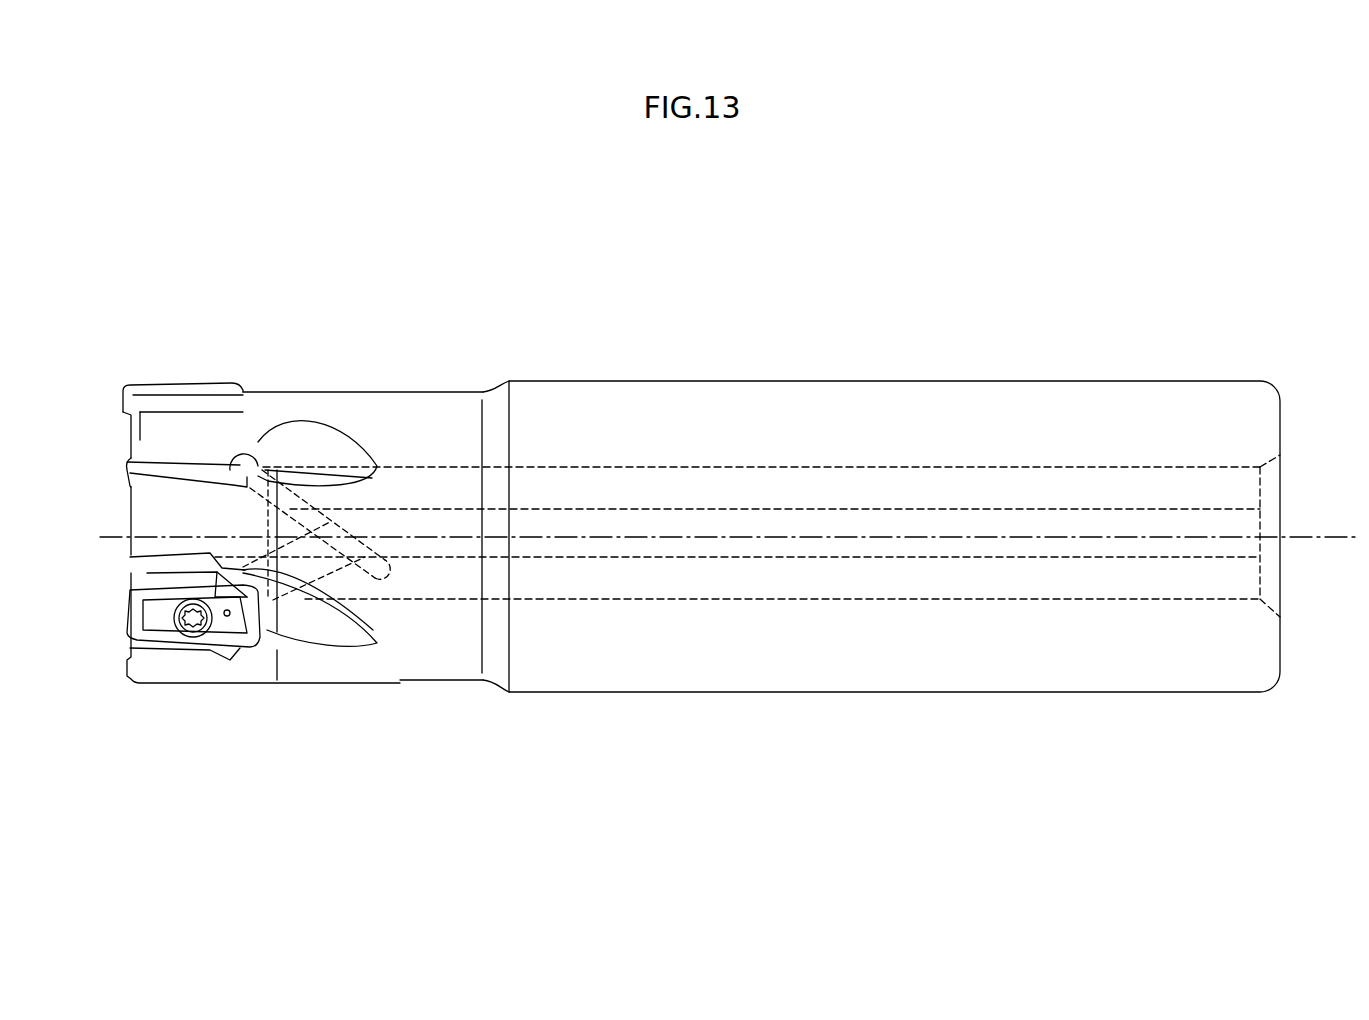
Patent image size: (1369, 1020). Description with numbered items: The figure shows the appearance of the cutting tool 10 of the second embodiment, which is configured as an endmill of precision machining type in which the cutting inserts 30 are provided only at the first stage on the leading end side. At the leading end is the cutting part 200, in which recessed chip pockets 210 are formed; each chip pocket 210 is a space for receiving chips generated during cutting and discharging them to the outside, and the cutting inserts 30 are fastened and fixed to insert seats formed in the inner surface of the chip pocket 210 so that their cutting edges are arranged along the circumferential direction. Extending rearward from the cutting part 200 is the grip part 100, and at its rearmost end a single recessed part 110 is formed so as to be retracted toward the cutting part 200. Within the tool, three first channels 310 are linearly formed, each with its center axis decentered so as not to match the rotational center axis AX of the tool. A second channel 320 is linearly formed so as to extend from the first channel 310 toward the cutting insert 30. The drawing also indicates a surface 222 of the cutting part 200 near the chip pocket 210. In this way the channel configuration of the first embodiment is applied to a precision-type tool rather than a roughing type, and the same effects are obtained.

The cutting tool 10 is at (1172, 255).
The grip part 100 is at (791, 353).
The recessed part 110 is at (1266, 527).
The cutting part 200 is at (256, 322).
The chip pocket 210 is at (193, 432).
The chip discharge surface 222 is at (245, 448).
The first channel 310 is at (917, 467).
The second channel 320 is at (313, 503).
The cutting insert 30 is at (150, 460).
The rotational center axis AX is at (1333, 537).